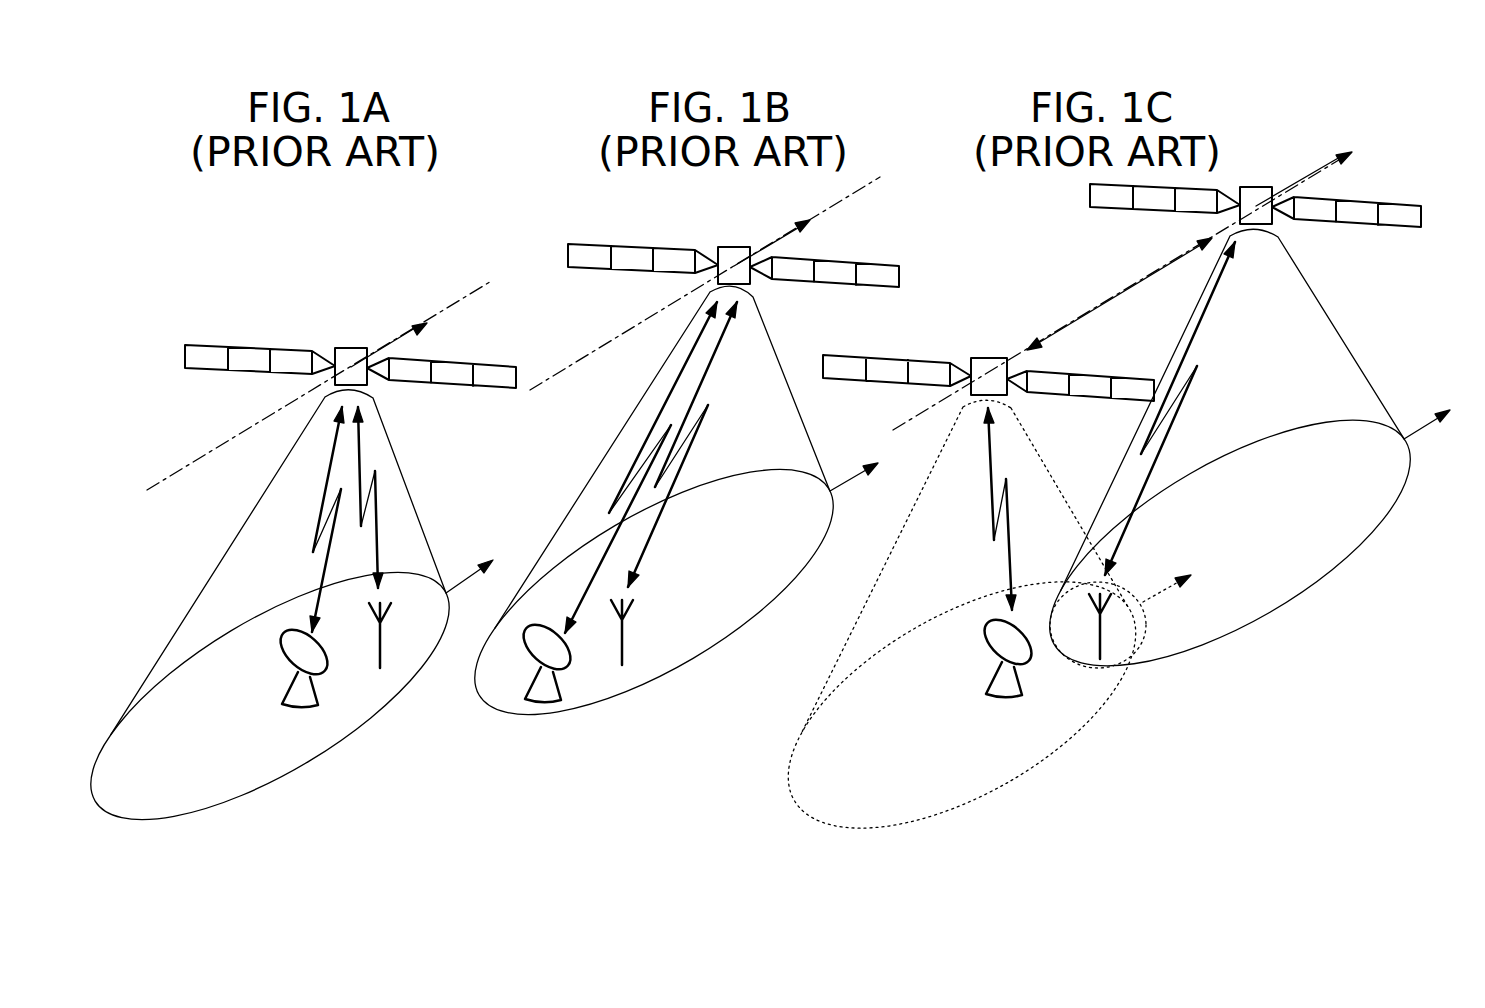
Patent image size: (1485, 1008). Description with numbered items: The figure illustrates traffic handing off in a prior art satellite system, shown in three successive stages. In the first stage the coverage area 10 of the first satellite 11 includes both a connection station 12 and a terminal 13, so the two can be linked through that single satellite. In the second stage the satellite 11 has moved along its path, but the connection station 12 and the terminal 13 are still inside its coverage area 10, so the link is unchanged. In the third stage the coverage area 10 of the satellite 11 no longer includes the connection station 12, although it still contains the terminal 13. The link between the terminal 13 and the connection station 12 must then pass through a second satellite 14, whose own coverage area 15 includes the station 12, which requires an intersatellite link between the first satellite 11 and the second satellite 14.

In FIG. 1A, the coverage area 10 is at (298, 766).
In FIG. 1B, the coverage area 10 is at (708, 655).
In FIG. 1C, the coverage area 10 is at (1234, 630).
In FIG. 1A, the first satellite 11 is at (353, 347).
In FIG. 1B, the first satellite 11 is at (735, 256).
In FIG. 1C, the first satellite 11 is at (1256, 191).
In FIG. 1A, the connection station 12 is at (321, 650).
In FIG. 1B, the connection station 12 is at (562, 650).
In FIG. 1C, the connection station 12 is at (1027, 650).
In FIG. 1A, the terminal 13 is at (390, 613).
In FIG. 1B, the terminal 13 is at (632, 611).
In FIG. 1C, the terminal 13 is at (1108, 612).
In FIG. 1C, the second satellite 14 is at (988, 358).
In FIG. 1C, the coverage area 15 is at (1030, 756).